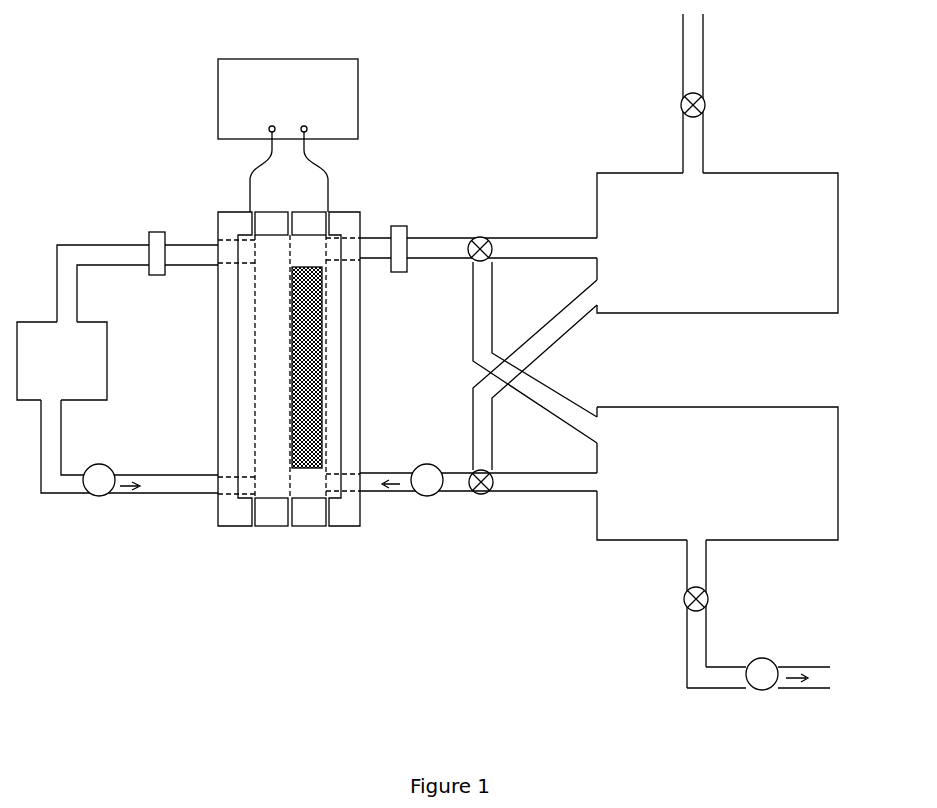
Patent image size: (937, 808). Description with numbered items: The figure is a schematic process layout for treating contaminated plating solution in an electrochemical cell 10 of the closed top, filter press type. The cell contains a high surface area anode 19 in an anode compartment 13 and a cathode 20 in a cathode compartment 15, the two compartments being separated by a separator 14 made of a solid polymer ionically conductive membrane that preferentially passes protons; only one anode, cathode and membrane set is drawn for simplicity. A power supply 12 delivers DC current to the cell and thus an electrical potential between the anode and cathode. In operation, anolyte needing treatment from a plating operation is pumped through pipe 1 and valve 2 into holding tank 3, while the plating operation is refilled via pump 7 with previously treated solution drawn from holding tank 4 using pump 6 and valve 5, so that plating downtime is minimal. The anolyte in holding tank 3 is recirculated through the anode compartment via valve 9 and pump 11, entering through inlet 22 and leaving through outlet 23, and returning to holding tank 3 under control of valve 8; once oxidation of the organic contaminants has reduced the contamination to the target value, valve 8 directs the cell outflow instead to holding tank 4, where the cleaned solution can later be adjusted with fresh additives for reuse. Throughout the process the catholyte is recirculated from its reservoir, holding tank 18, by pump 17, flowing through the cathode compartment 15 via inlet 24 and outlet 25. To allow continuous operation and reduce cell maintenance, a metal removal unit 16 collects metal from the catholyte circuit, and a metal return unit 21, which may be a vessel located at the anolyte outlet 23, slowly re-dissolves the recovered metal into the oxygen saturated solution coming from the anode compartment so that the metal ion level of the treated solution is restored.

The pipe 1 is at (690, 22).
The valve 2 is at (707, 104).
The holding tank 3 is at (717, 243).
The holding tank 4 is at (717, 473).
The valve 5 is at (710, 600).
The pump 6 is at (770, 657).
The pump 7 is at (820, 682).
The valve 8 is at (484, 237).
The valve 9 is at (484, 496).
The electrochemical cell 10 is at (347, 208).
The pump 11 is at (425, 462).
The power supply 12 is at (288, 135).
The anode compartment 13 is at (310, 493).
The separator 14 is at (288, 480).
The cathode compartment 15 is at (272, 467).
The metal removal unit 16 is at (147, 232).
The pump 17 is at (108, 462).
The holding tank 18 is at (62, 361).
The anode 19 is at (322, 376).
The cathode 20 is at (248, 373).
The metal return unit 21 is at (401, 225).
The inlet 22 is at (368, 494).
The outlet 23 is at (355, 257).
The inlet 24 is at (222, 486).
The outlet 25 is at (218, 250).